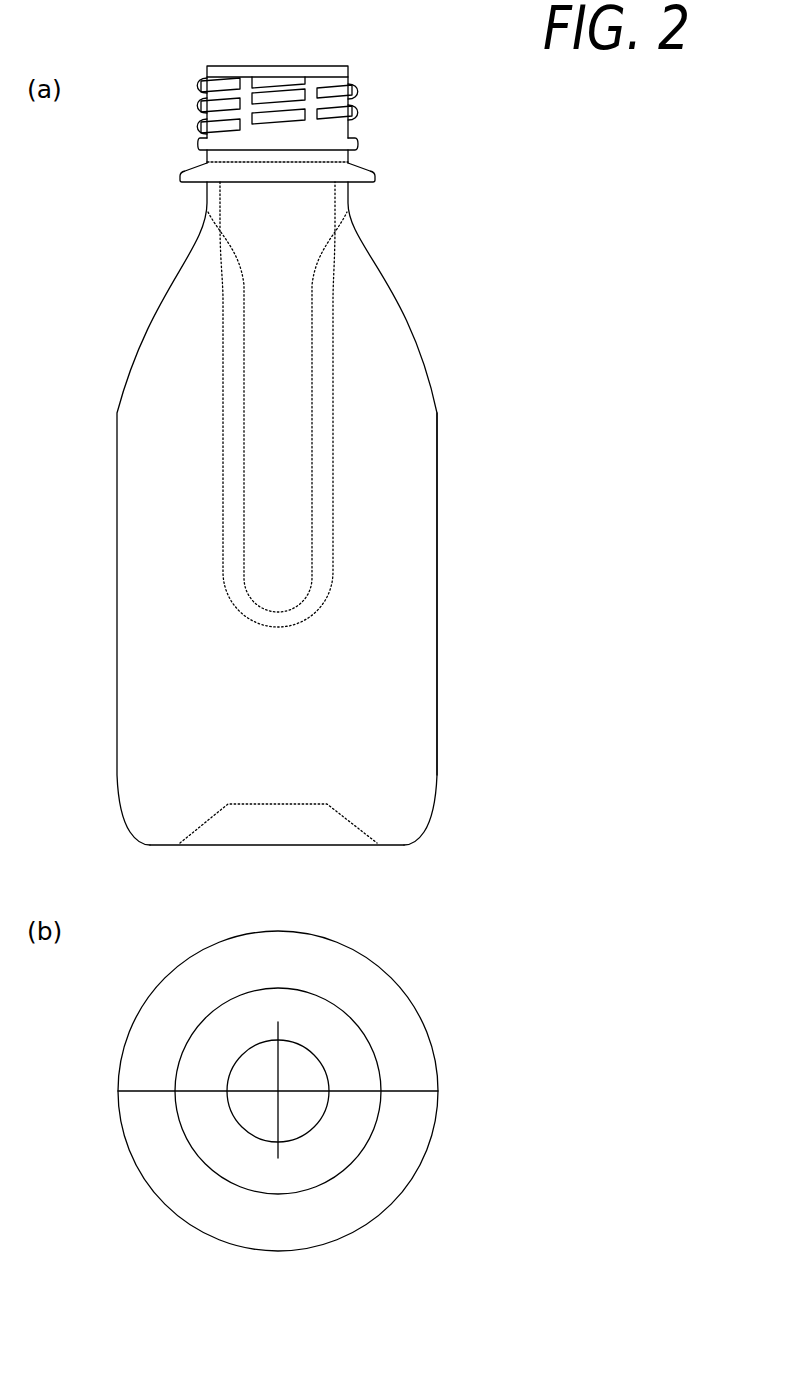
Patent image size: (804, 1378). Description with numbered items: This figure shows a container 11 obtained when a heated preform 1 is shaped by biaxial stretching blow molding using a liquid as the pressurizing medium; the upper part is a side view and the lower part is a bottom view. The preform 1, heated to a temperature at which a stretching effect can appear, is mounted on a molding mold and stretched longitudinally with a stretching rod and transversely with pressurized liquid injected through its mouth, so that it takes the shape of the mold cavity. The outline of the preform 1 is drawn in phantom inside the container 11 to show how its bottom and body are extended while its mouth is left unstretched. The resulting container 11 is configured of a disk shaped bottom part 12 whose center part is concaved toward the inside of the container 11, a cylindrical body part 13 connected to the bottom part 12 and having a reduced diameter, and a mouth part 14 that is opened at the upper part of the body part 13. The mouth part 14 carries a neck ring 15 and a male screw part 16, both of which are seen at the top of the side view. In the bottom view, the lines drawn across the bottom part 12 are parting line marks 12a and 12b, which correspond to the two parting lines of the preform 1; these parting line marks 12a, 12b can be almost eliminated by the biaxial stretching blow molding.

The preform 1 is at (333, 342).
The container 11 is at (463, 457).
The bottom part 12 is at (387, 847).
The parting line mark 12a is at (412, 1091).
The parting line mark 12b is at (278, 1037).
The body part 13 is at (438, 540).
The mouth part 14 is at (373, 80).
The neck ring 15 is at (374, 176).
The male screw part 16 is at (357, 107).